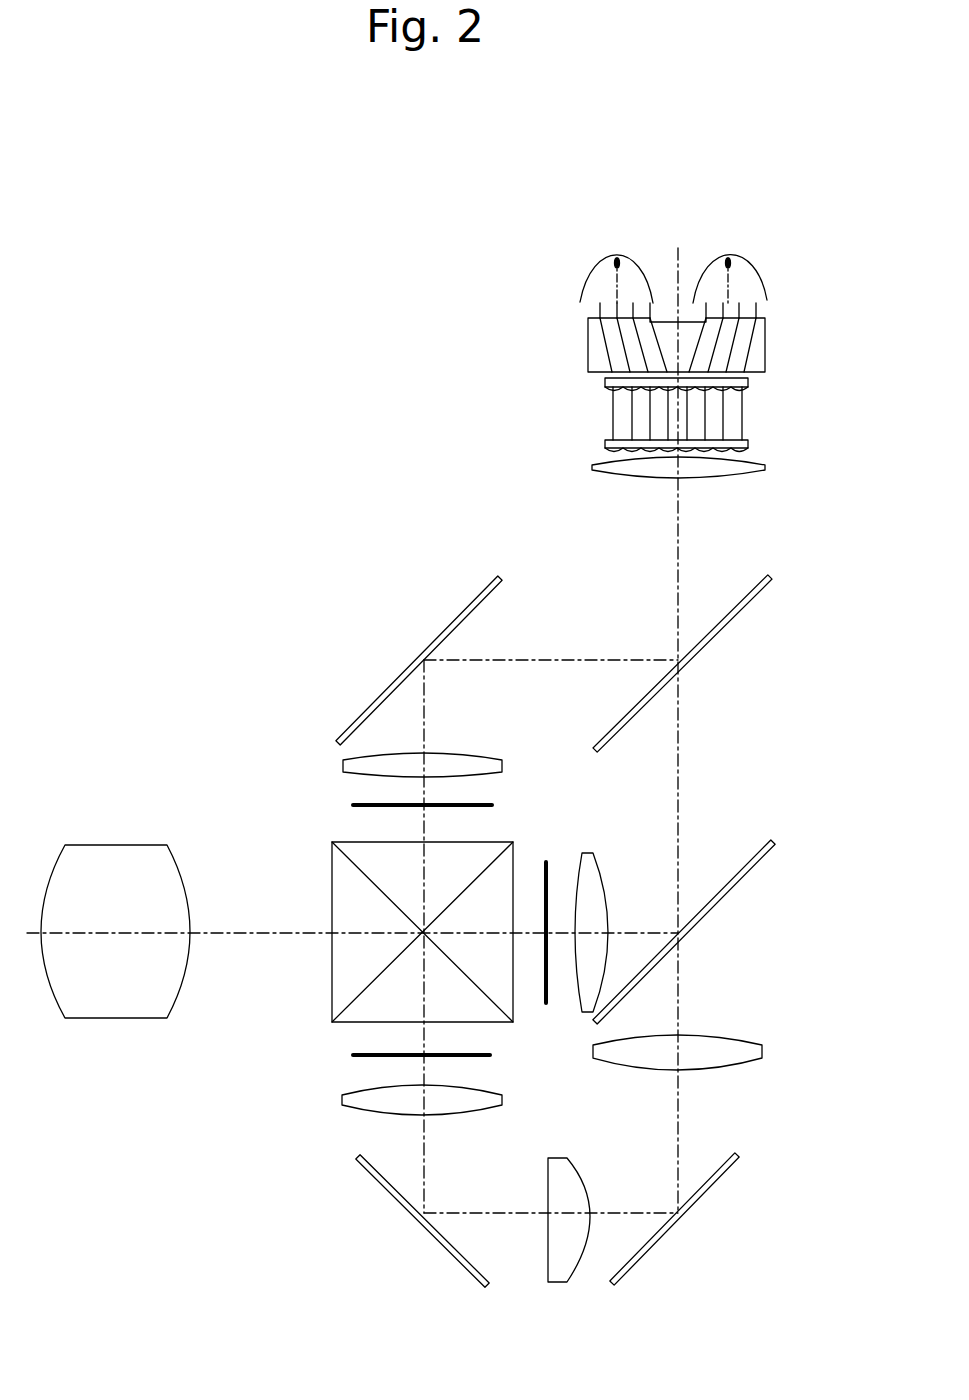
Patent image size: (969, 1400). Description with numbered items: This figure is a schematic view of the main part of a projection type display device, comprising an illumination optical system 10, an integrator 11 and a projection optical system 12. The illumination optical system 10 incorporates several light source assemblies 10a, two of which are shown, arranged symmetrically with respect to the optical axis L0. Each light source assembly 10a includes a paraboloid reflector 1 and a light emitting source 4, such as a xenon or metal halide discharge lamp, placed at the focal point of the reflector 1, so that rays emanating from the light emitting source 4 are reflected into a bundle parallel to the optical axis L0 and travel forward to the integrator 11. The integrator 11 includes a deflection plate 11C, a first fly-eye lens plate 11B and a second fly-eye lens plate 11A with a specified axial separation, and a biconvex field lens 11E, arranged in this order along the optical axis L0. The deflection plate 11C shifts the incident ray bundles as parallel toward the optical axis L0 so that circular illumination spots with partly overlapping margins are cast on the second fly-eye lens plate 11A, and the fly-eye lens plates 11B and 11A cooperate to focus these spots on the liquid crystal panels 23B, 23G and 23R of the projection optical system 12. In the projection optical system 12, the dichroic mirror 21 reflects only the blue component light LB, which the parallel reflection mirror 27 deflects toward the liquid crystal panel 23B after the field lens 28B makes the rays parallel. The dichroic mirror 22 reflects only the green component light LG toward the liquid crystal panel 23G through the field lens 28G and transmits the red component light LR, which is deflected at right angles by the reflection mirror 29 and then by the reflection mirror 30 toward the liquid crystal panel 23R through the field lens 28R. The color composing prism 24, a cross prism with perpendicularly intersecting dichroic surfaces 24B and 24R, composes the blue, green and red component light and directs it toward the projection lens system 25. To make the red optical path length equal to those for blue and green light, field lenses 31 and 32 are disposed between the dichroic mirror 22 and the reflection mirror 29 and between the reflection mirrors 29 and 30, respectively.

The illumination optical system 10 is at (663, 252).
The light source assembly 10a is at (587, 288).
The light emitting source 4 is at (608, 265).
The paraboloid reflector 1 is at (648, 291).
The integrator 11 is at (608, 393).
The deflection plate 11C is at (588, 333).
The second fly-eye lens plate 11A is at (605, 383).
The first fly-eye lens plate 11B is at (605, 443).
The biconvex field lens 11E is at (592, 467).
The optical axis L0 is at (678, 537).
The projection optical system 12 is at (565, 605).
The blue component light LB is at (567, 658).
The reflection mirror 27 is at (452, 620).
The dichroic mirror 21 is at (767, 578).
The dichroic mirror 22 is at (740, 866).
The field lens 28B is at (482, 758).
The liquid crystal panel 23B is at (355, 803).
The color composing prism 24 is at (340, 870).
The dichroic surface 24B is at (488, 858).
The dichroic surface 24R is at (507, 1007).
The liquid crystal panel 23G is at (550, 868).
The field lens 28G is at (603, 883).
The green component light LG is at (637, 930).
The red component light LR is at (690, 993).
The field lens 31 is at (712, 1063).
The projection lens system 25 is at (117, 845).
The liquid crystal panel 23R is at (355, 1055).
The field lens 28R is at (345, 1102).
The field lens 32 is at (572, 1183).
The reflection mirror 30 is at (392, 1197).
The reflection mirror 29 is at (715, 1190).